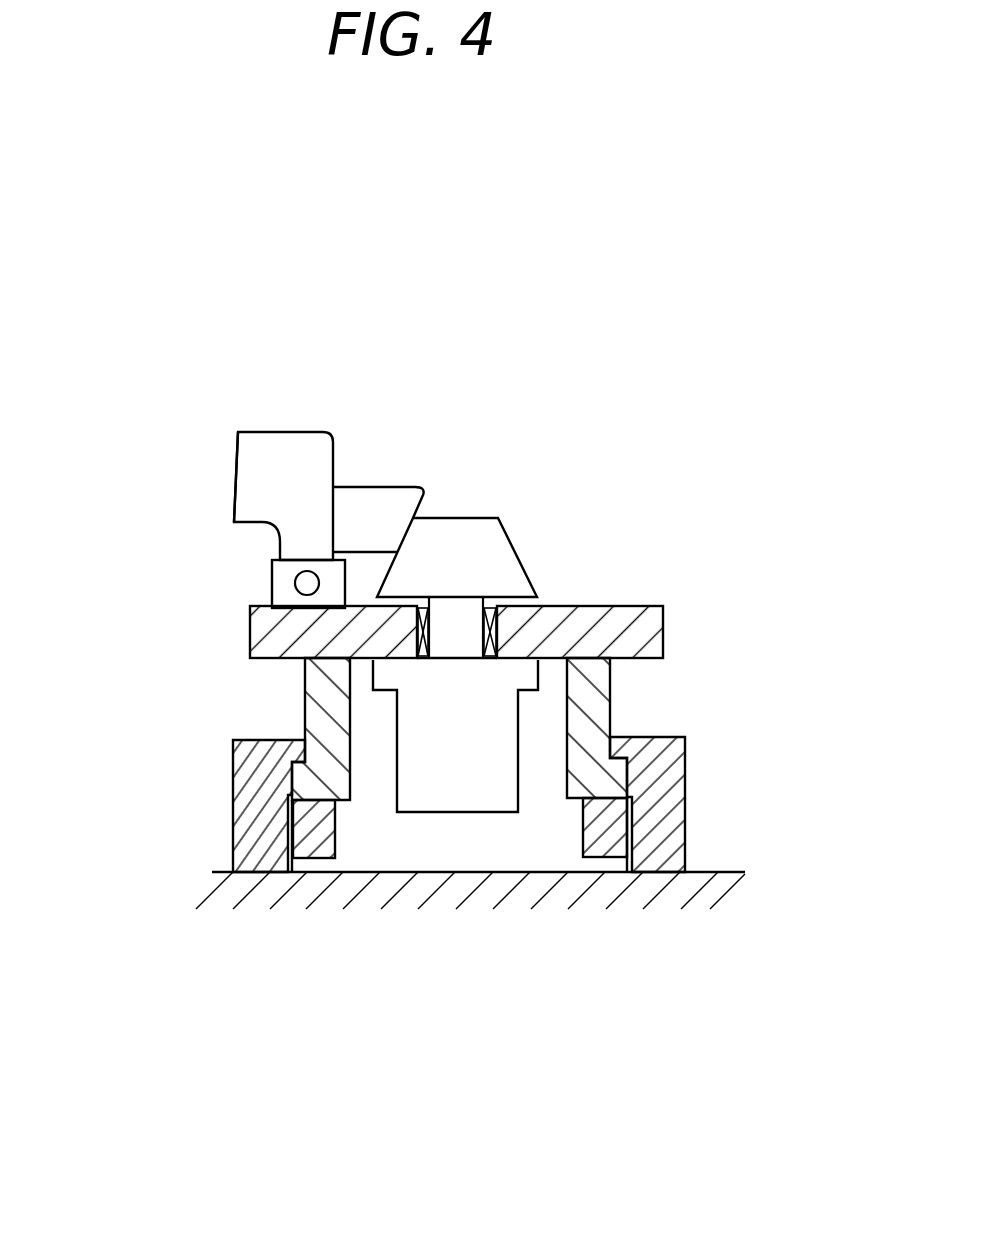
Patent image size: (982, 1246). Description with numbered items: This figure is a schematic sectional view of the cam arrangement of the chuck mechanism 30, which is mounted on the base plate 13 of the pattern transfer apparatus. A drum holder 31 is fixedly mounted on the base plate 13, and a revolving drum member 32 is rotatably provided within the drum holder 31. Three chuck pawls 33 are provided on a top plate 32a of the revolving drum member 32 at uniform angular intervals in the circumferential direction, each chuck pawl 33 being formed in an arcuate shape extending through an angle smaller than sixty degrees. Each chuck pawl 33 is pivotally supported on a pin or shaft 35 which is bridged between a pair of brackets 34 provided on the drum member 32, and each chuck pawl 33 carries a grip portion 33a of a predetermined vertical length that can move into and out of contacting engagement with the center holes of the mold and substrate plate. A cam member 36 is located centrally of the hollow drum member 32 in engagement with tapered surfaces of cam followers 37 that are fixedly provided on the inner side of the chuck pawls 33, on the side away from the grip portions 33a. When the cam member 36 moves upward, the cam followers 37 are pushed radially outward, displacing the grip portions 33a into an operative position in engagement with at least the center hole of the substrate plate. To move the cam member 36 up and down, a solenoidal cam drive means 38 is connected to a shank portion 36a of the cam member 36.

The base plate 13 is at (540, 872).
The chuck mechanism 30 is at (422, 462).
The drum holder 31 is at (255, 833).
The revolving drum member 32 is at (308, 703).
The top plate 32a is at (628, 633).
The chuck pawl 33 is at (283, 458).
The grip portion 33a is at (237, 475).
The bracket 34 is at (277, 578).
The pin or shaft 35 is at (300, 587).
The cam member 36 is at (475, 535).
The shank portion 36a is at (465, 622).
The cam follower 37 is at (362, 493).
The solenoidal cam drive means 38 is at (427, 778).